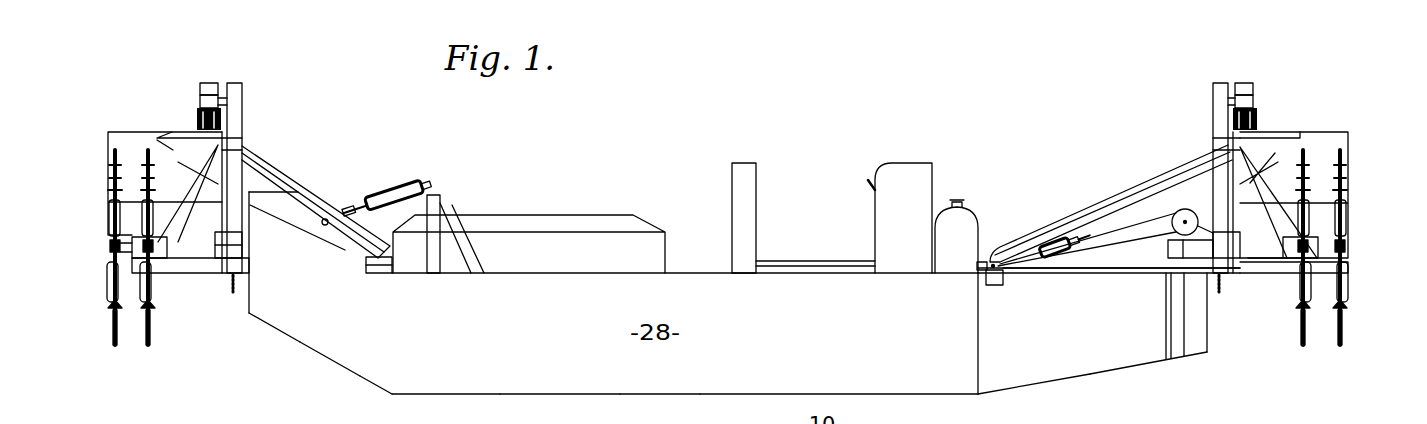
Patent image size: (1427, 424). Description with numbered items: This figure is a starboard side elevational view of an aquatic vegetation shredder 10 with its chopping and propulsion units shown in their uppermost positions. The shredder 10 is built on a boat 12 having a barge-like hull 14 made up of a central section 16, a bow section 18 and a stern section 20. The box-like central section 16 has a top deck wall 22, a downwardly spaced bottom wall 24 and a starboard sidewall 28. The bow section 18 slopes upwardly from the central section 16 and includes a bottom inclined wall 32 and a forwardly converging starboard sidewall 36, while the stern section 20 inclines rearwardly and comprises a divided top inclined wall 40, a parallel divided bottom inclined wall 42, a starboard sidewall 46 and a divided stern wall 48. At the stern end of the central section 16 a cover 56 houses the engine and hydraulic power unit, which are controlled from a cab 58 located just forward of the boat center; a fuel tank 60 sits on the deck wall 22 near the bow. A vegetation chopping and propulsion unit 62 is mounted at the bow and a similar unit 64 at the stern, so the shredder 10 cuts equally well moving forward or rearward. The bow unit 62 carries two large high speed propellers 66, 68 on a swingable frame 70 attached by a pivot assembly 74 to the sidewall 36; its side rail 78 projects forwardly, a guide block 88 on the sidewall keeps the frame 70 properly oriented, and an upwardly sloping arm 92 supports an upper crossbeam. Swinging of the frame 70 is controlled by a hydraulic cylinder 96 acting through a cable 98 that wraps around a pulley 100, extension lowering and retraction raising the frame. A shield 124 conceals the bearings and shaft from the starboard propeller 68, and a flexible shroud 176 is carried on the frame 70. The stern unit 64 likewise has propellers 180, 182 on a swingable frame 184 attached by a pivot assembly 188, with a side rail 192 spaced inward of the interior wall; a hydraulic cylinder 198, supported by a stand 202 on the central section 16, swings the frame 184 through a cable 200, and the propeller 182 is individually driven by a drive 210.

The aquatic vegetation shredder 10 is at (873, 127).
The boat 12 is at (868, 394).
The hull 14 is at (447, 394).
The central section 16 is at (686, 386).
The bow section 18 is at (1104, 368).
The stern section 20 is at (372, 378).
The top deck wall 22 is at (683, 272).
The bottom wall 24 is at (621, 394).
The starboard sidewall 28 is at (725, 308).
The bottom inclined wall 32 is at (1064, 380).
The starboard sidewall 36 is at (1025, 358).
The divided top inclined wall 40 is at (342, 247).
The divided bottom inclined wall 42 is at (343, 362).
The starboard sidewall 46 is at (330, 322).
The divided stern wall 48 is at (248, 300).
The cover 56 is at (557, 215).
The cab 58 is at (743, 162).
The fuel tank 60 is at (972, 216).
The vegetation chopping and propulsion unit 62 is at (1220, 82).
The vegetation chopping and propulsion unit 64 is at (235, 82).
The propeller 66 is at (1350, 212).
The propeller 68 is at (1302, 334).
The swingable frame 70 is at (1150, 176).
The pivot assembly 74 is at (995, 266).
The side rail 78 is at (1093, 273).
The guide block 88 is at (1176, 352).
The arm 92 is at (1196, 166).
The hydraulic cylinder 96 is at (1031, 245).
The cable 98 is at (1116, 208).
The pulley 100 is at (1184, 214).
The shield 124 is at (1265, 252).
The flexible shroud 176 is at (1350, 135).
The propeller 180 is at (106, 290).
The propeller 182 is at (157, 330).
The swingable frame 184 is at (285, 176).
The pivot assembly 188 is at (386, 273).
The side rail 192 is at (238, 273).
The hydraulic cylinder 198 is at (400, 184).
The cable 200 is at (322, 224).
The stand 202 is at (456, 208).
The drive 210 is at (200, 83).